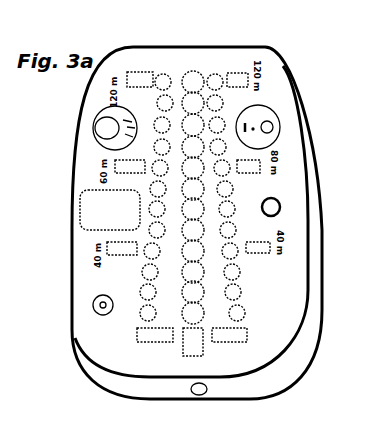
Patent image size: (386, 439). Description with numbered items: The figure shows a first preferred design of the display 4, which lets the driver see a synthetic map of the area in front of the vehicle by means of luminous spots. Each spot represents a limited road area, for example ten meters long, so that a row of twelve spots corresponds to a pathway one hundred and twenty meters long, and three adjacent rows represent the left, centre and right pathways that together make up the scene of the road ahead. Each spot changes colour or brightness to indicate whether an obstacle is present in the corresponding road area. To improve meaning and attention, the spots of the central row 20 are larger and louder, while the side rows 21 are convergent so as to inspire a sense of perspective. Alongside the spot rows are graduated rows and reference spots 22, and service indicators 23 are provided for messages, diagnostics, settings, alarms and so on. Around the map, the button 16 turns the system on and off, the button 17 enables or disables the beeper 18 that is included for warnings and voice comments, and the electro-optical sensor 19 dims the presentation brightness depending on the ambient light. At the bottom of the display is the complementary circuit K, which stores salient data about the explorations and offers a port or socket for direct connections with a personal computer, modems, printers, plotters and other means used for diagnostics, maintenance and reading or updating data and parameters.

The display 4 is at (199, 46).
The button 16 is at (264, 106).
The button 17 is at (100, 145).
The beeper 18 is at (93, 305).
The electro-optical sensor 19 is at (280, 198).
The central row 20 is at (198, 318).
The side rows 21 is at (146, 315).
The graduated rows and reference spots 22 is at (258, 252).
The service indicators 23 is at (80, 218).
The complementary circuit K is at (201, 394).